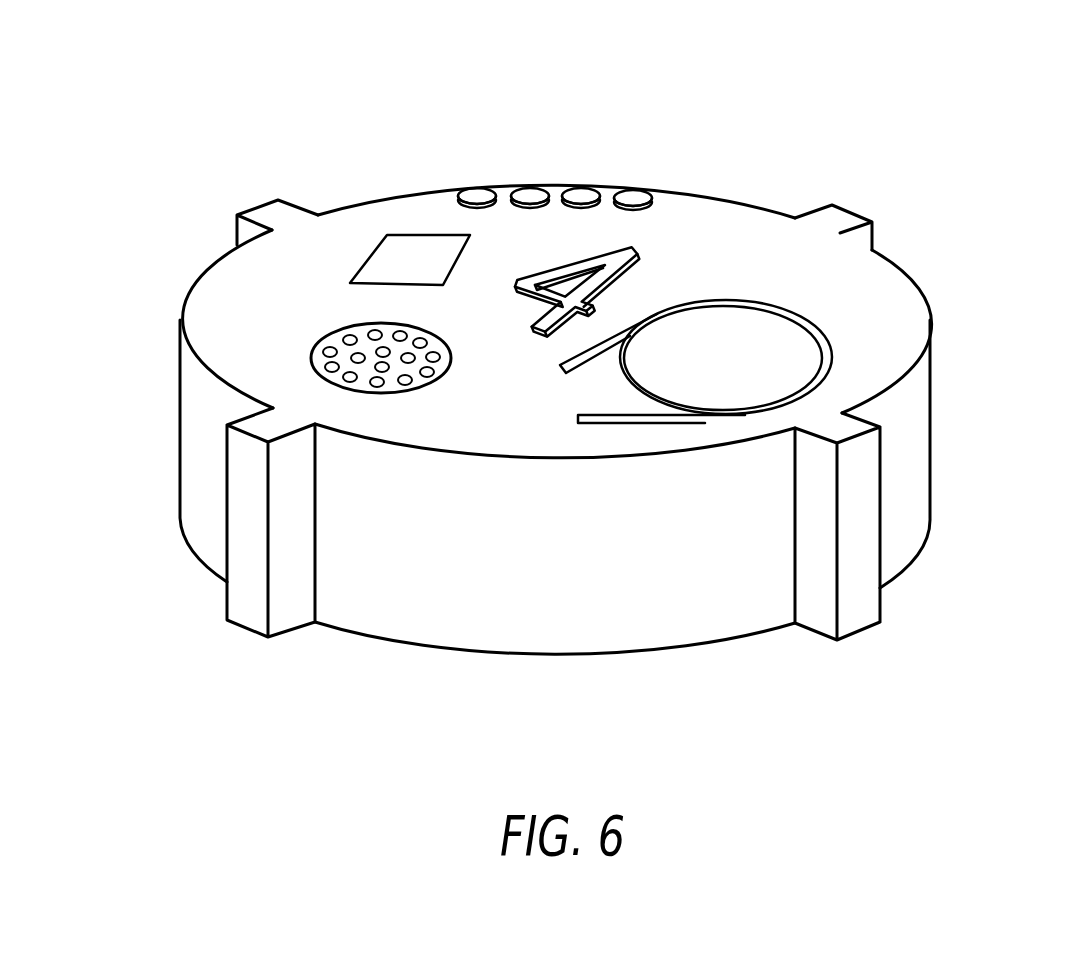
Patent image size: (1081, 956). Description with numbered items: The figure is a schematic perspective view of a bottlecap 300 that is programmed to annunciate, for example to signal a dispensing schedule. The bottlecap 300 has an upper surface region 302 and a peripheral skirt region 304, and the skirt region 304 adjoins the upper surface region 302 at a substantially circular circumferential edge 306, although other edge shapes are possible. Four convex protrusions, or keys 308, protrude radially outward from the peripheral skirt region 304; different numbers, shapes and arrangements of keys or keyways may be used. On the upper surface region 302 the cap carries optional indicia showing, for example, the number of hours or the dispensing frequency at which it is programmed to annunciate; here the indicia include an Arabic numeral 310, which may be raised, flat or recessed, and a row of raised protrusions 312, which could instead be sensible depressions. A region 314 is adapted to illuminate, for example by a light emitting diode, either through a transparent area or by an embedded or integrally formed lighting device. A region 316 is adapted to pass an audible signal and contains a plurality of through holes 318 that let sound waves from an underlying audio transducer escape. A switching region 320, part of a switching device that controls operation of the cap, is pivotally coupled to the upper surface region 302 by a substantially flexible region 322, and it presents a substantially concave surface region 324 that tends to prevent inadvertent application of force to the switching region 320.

The bottlecap 300 is at (937, 110).
The upper surface region 302 is at (883, 333).
The peripheral skirt region 304 is at (908, 470).
The circumferential edge 306 is at (903, 377).
The key 308 is at (272, 220).
The Arabic numeral 310 is at (637, 253).
The raised protrusions 312 is at (633, 198).
The region adapted to illuminate 314 is at (415, 257).
The region adapted to pass an audible signal 316 is at (331, 345).
The through holes 318 is at (337, 383).
The switching region 320 is at (773, 355).
The flexible region 322 is at (603, 383).
The concave surface region 324 is at (723, 355).